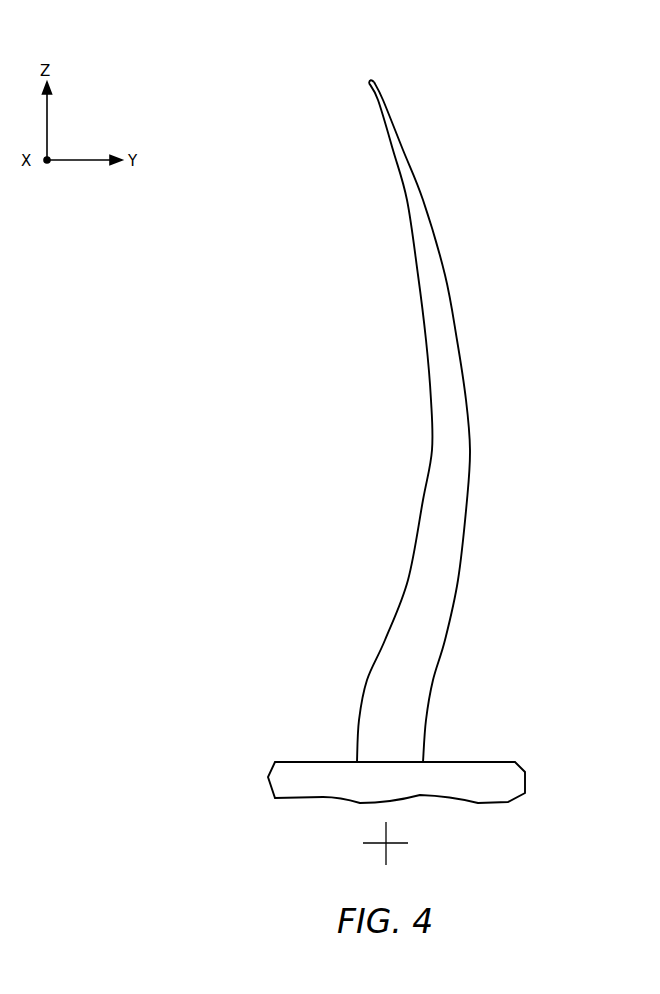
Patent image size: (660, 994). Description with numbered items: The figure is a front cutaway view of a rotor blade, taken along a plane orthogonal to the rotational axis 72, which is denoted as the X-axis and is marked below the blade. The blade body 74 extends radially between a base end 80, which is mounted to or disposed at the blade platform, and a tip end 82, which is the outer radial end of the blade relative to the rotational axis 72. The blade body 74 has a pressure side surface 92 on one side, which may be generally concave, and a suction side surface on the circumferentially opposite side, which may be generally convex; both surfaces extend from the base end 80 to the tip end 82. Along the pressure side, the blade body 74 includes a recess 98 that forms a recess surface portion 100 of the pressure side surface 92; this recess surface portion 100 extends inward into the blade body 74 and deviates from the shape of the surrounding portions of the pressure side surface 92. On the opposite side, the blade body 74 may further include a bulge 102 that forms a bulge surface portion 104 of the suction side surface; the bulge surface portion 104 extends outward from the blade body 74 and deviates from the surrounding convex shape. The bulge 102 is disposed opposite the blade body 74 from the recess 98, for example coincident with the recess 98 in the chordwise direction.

The blade body 74 is at (523, 162).
The tip end 82 is at (357, 66).
The base end 80 is at (443, 744).
The rotational axis 72 is at (395, 845).
The pressure side surface 92 is at (418, 275).
The recess surface portion 100 is at (430, 400).
The recess 98 is at (404, 443).
The bulge 102 is at (494, 408).
The bulge surface portion 104 is at (468, 435).